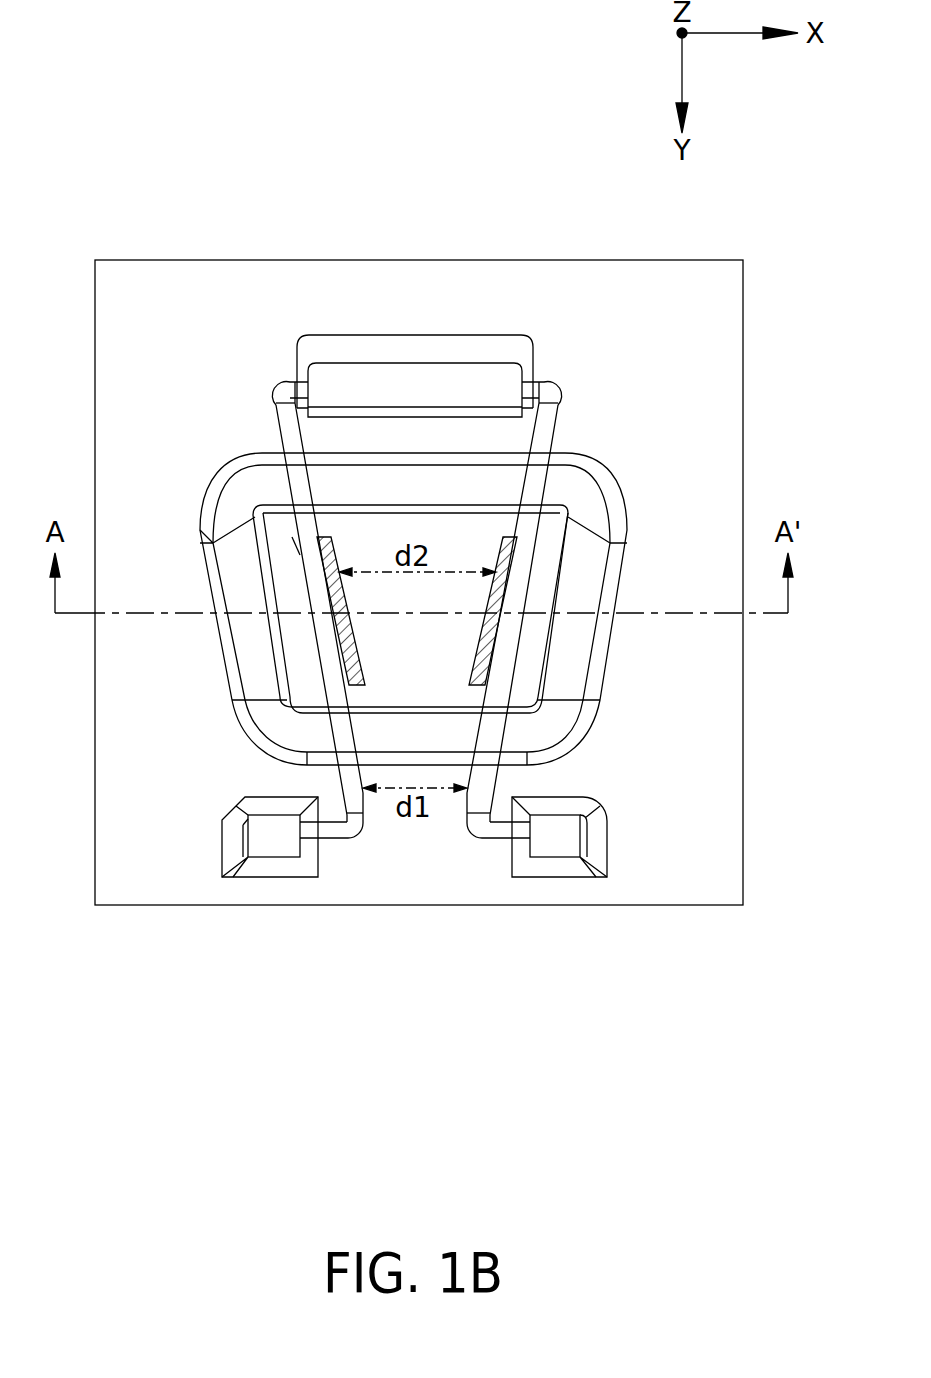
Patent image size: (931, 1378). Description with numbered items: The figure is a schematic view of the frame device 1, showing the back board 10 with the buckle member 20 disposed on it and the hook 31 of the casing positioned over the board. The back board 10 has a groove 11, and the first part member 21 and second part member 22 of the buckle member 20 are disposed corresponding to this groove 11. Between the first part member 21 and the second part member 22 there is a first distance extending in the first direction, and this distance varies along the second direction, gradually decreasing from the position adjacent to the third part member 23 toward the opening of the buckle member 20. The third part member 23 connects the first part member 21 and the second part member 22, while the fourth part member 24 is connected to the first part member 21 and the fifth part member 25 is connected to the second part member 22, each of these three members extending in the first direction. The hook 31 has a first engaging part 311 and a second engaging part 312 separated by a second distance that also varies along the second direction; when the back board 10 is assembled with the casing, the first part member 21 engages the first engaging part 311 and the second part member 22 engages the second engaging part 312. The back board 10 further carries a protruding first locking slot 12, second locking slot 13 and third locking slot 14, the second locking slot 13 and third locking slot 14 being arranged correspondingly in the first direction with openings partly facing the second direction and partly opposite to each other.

The frame device 1 is at (572, 191).
The back board 10 is at (148, 865).
The groove 11 is at (307, 680).
The first locking slot 12 is at (417, 372).
The second locking slot 13 is at (275, 845).
The third locking slot 14 is at (553, 845).
The buckle member 20 is at (285, 590).
The first part member 21 is at (282, 425).
The second part member 22 is at (547, 426).
The third part member 23 is at (528, 387).
The fourth part member 24 is at (330, 830).
The fifth part member 25 is at (503, 832).
The hook 31 is at (512, 533).
The first engaging part 311 is at (340, 648).
The second engaging part 312 is at (483, 637).